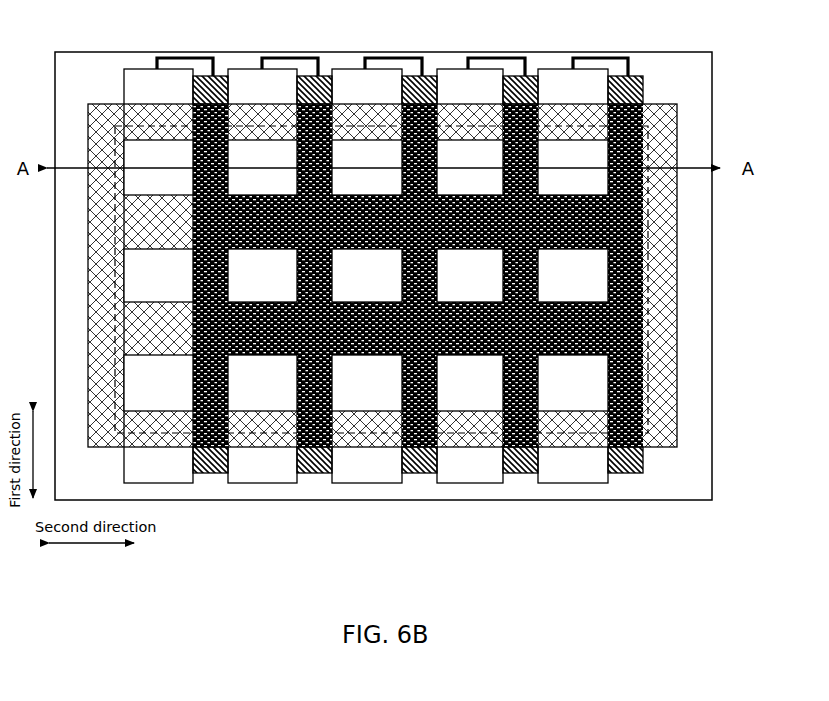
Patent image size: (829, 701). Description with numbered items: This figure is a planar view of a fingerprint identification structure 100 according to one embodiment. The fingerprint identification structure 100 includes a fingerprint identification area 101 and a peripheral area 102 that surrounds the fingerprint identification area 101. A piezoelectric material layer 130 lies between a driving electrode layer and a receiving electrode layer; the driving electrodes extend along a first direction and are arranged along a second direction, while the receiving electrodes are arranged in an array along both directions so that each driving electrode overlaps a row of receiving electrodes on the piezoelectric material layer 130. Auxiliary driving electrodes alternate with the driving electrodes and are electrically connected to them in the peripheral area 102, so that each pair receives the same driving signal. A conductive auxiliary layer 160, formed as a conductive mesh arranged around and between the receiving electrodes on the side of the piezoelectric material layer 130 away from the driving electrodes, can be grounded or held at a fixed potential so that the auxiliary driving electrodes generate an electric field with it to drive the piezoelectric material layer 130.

The fingerprint identification structure 100 is at (413, 580).
The fingerprint identification area 101 is at (452, 445).
The peripheral area 102 is at (210, 490).
The piezoelectric material layer 130 is at (557, 122).
The conductive auxiliary layer 160 is at (537, 447).